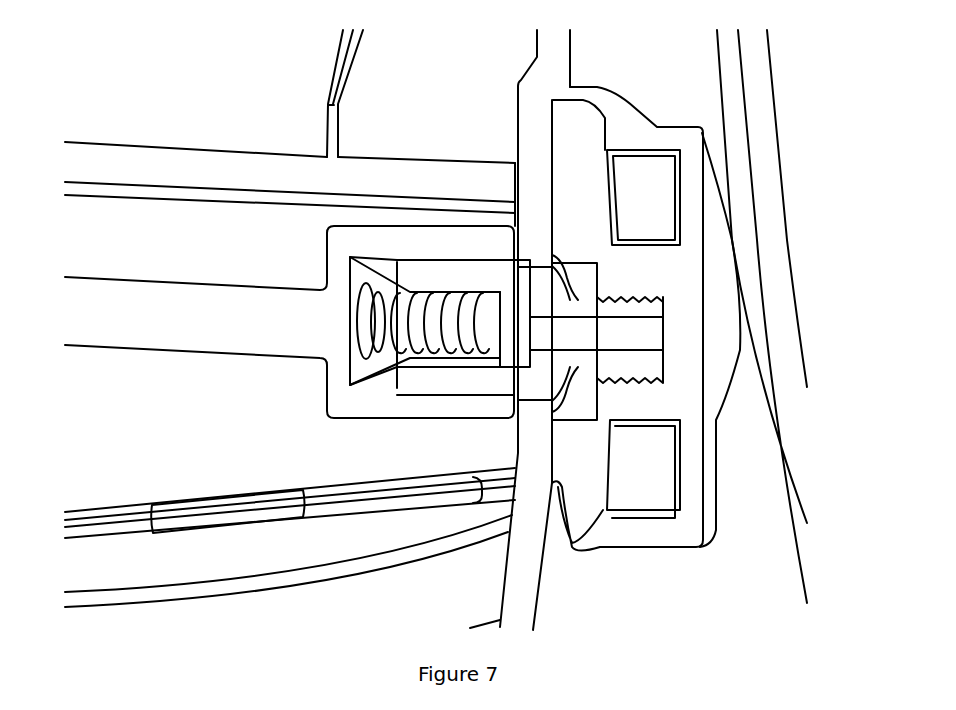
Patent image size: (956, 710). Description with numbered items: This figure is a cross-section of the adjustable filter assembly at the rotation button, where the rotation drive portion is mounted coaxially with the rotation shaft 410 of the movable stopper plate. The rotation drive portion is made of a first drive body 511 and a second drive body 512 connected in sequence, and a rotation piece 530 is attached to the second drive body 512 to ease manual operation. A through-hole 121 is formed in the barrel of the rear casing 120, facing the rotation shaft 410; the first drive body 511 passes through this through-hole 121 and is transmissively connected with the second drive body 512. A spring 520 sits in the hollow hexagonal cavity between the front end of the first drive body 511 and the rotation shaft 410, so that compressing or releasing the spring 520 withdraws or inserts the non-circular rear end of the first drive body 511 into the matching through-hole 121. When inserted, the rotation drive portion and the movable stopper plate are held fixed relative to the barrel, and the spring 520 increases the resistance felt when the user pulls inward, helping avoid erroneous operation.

The rear casing 120 is at (527, 123).
The through-hole 121 is at (522, 253).
The rotation shaft 410 is at (347, 408).
The first drive body 511 is at (473, 397).
The second drive body 512 is at (582, 310).
The spring 520 is at (357, 293).
The rotation piece 530 is at (673, 535).